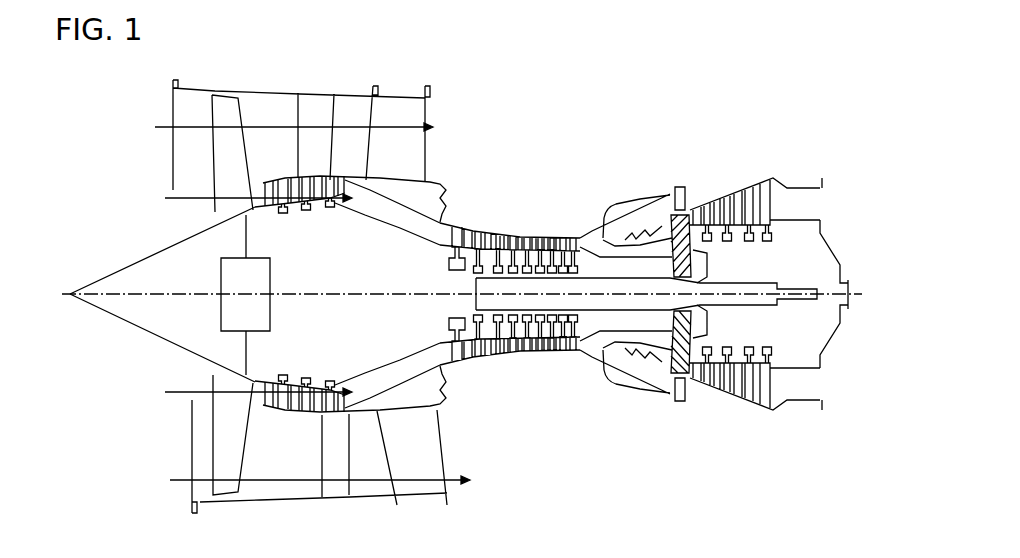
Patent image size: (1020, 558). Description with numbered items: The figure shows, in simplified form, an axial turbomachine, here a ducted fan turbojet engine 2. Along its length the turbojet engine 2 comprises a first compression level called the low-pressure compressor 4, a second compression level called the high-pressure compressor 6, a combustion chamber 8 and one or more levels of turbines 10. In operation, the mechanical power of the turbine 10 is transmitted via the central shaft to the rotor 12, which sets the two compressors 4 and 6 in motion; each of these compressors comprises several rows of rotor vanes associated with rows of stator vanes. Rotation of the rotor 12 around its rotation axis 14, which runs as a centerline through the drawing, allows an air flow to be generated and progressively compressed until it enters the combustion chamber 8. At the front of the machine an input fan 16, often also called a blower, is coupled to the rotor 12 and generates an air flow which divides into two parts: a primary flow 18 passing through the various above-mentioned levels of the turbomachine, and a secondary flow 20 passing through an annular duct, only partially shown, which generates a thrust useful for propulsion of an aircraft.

The turbojet engine 2 is at (624, 113).
The low-pressure compressor 4 is at (280, 204).
The high-pressure compressor 6 is at (482, 230).
The combustion chamber 8 is at (612, 238).
The turbines 10 is at (752, 203).
The rotor 12 is at (150, 321).
The rotation axis 14 is at (315, 297).
The input fan 16 is at (230, 152).
The primary flow 18 is at (246, 294).
The secondary flow 20 is at (300, 303).